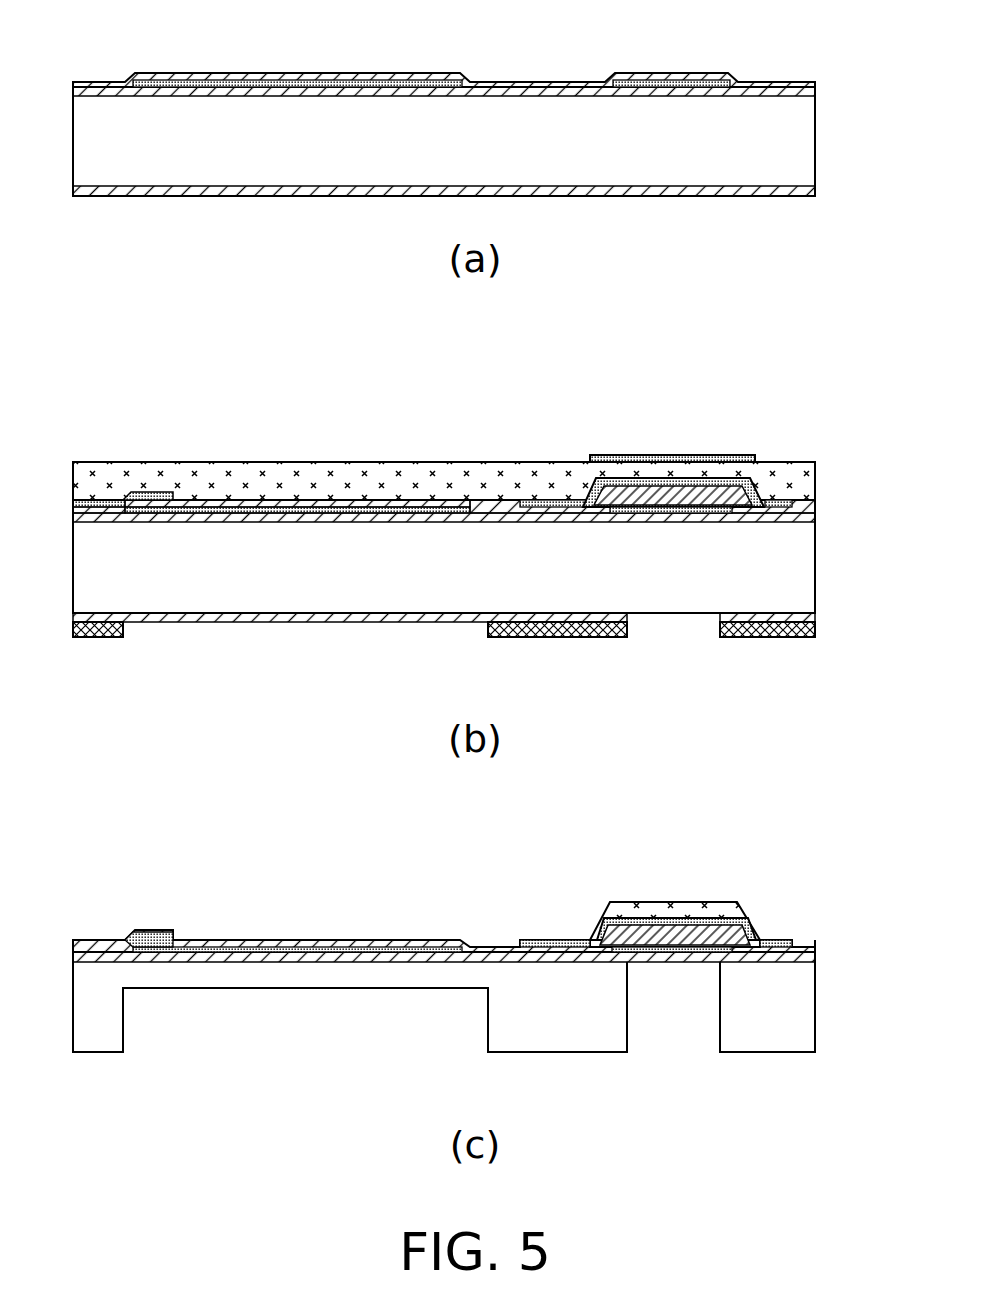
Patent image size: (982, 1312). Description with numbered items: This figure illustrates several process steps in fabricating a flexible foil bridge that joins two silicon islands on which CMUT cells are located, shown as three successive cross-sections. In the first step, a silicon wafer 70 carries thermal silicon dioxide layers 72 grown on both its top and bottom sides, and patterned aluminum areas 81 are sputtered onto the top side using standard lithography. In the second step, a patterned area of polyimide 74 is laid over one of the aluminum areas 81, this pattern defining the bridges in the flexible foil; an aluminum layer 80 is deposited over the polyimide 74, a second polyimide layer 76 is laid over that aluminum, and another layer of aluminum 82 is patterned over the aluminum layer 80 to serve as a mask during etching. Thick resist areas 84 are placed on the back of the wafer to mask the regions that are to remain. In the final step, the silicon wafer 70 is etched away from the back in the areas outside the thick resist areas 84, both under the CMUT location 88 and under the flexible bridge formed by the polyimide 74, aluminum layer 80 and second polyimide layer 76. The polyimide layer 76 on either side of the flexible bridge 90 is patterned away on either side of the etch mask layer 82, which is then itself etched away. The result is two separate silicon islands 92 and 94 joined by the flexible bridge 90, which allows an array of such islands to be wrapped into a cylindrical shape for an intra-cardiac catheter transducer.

The silicon wafer 70 is at (808, 143).
The thermal silicon dioxide layer 72 is at (820, 92).
The polyimide 74 is at (673, 500).
The second polyimide layer 76 is at (445, 462).
The aluminum layer 80 is at (754, 486).
The patterned aluminum area 81 is at (300, 82).
The aluminum mask layer 82 is at (672, 455).
The thick resist area 84 is at (557, 637).
The CMUT location 88 is at (320, 920).
The flexible bridge 90 is at (737, 886).
The silicon island 92 is at (557, 1047).
The silicon island 94 is at (763, 1047).